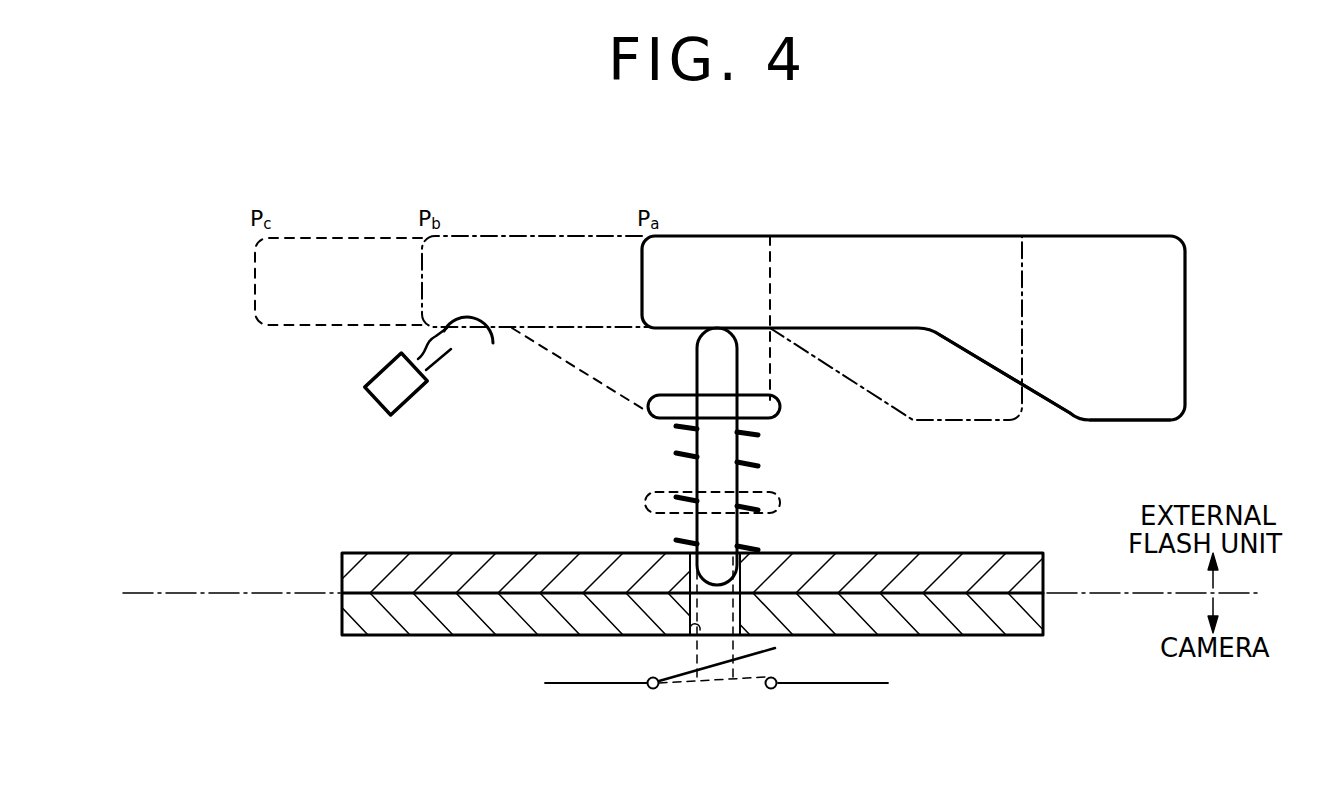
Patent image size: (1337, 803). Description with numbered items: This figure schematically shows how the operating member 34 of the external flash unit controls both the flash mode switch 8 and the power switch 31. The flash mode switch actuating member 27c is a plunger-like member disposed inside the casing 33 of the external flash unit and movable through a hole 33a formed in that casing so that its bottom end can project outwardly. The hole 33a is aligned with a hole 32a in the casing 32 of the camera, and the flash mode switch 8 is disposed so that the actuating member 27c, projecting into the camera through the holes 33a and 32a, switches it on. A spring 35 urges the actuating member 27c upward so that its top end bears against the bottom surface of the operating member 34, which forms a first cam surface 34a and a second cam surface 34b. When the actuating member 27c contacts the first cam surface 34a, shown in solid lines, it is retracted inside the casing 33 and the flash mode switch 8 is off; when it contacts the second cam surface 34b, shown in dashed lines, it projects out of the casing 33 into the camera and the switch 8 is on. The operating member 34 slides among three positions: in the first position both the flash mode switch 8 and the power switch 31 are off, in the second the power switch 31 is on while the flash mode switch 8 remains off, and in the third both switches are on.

The operating member 34 is at (1089, 238).
The first cam surface 34a is at (926, 330).
The second cam surface 34b is at (1122, 422).
The flash mode switch actuating member 27c is at (697, 352).
The power switch 31 is at (378, 396).
The spring 35 is at (663, 455).
The casing of the external flash unit 33 is at (932, 553).
The hole in the flash unit casing 33a is at (740, 580).
The casing of the camera 32 is at (966, 637).
The hole in the camera casing 32a is at (695, 634).
The flash mode switch 8 is at (728, 687).